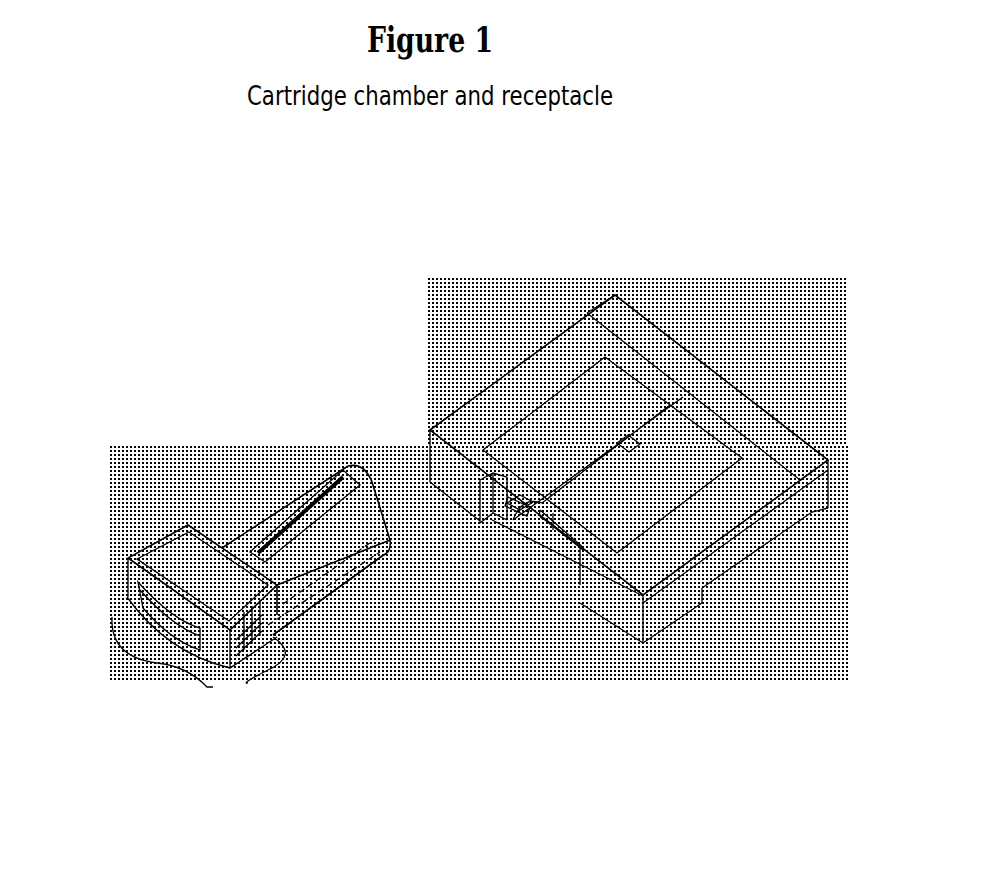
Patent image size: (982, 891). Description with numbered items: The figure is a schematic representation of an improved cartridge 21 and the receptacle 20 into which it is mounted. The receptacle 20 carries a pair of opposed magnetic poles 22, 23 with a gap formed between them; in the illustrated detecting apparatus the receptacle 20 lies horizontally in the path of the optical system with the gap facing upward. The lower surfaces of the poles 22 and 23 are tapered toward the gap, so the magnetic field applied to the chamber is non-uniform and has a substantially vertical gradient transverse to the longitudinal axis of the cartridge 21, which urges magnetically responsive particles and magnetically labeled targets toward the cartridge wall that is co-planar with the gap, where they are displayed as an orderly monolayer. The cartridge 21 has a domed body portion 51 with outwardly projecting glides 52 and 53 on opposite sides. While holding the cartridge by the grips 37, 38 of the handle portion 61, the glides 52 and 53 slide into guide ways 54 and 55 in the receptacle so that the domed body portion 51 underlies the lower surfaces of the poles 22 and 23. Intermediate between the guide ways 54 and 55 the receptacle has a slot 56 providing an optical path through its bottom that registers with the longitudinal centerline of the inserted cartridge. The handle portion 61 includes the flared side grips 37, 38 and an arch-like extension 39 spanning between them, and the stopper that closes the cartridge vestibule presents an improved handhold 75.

The receptacle 20 is at (767, 557).
The cartridge 21 is at (347, 590).
The magnetic pole 22 is at (635, 480).
The magnetic pole 23 is at (579, 425).
The grip 37 is at (232, 660).
The grip 38 is at (128, 558).
The arch-like extension 39 is at (157, 663).
The domed body portion 51 is at (347, 518).
The glide 52 is at (310, 593).
The glide 53 is at (277, 497).
The guide way 54 is at (567, 545).
The guide way 55 is at (505, 506).
The slot 56 is at (658, 420).
The handle portion 61 is at (248, 683).
The handhold 75 is at (157, 610).